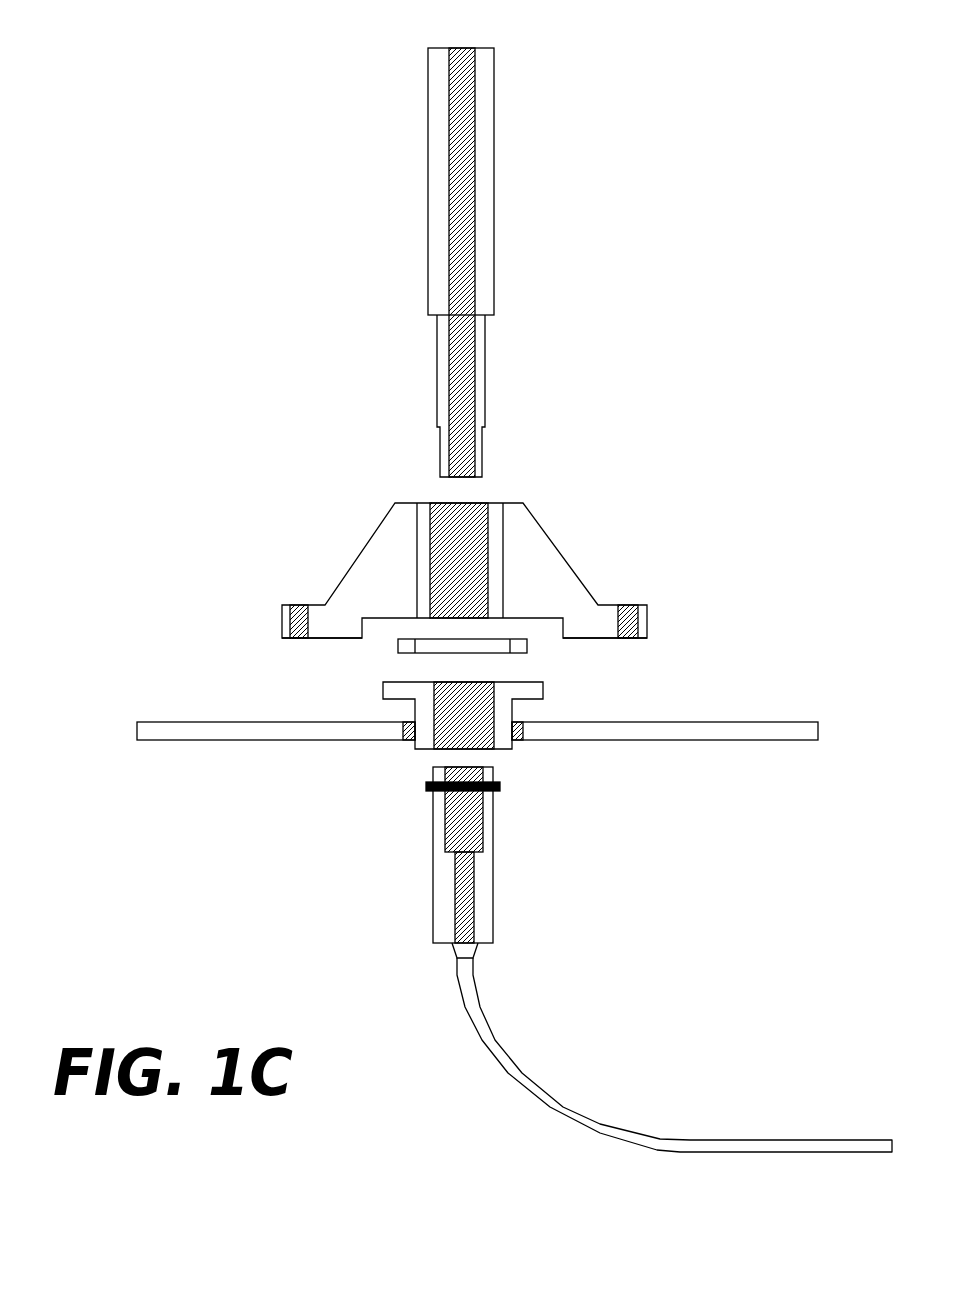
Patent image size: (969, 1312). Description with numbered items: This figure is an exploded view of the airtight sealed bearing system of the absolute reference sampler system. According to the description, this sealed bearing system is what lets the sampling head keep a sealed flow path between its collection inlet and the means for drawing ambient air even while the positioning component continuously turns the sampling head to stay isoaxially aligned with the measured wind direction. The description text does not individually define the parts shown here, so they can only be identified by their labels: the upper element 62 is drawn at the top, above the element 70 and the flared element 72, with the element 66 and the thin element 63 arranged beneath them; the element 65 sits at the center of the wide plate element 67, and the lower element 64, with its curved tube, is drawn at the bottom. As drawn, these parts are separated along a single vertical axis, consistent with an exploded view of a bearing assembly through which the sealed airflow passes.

The upper drive shaft 62 is at (513, 277).
The spindle core 70 is at (415, 493).
The conical hub body 72 is at (567, 548).
The base flange 66 is at (297, 653).
The spacer plate 63 is at (545, 658).
The flanged hub 65 is at (520, 753).
The disk 67 is at (675, 700).
The lower body with outlet tube 64 is at (410, 809).